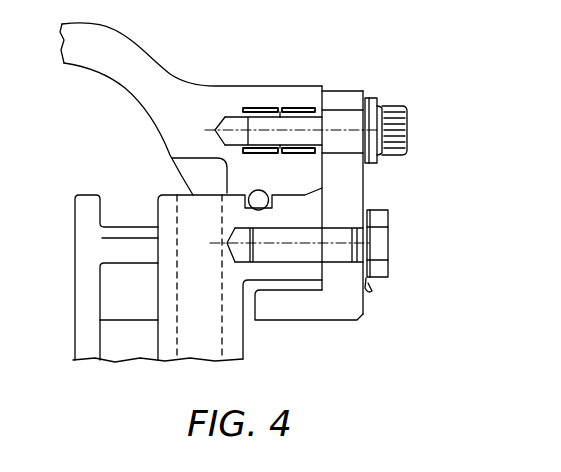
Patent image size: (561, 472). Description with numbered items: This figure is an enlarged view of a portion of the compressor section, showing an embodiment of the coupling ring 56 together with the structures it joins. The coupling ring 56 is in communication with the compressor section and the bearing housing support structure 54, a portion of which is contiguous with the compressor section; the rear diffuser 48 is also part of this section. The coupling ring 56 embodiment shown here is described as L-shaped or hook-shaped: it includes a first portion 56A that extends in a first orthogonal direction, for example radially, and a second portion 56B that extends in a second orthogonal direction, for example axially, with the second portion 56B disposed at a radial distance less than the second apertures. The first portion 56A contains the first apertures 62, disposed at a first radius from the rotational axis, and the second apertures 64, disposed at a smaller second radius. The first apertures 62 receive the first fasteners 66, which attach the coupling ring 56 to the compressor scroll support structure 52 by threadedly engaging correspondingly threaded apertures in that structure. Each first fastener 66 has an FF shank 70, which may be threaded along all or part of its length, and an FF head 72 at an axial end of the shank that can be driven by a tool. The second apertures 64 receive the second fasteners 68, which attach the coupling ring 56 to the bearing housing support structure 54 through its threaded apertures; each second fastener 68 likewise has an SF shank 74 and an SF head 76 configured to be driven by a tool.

The rear diffuser 48 is at (130, 340).
The compressor scroll support structure 52 is at (200, 110).
The bearing housing support structure 54 is at (232, 340).
The coupling ring 56 is at (392, 184).
The coupling ring first portion 56A is at (346, 98).
The coupling ring second portion 56B is at (345, 307).
The first apertures 62 is at (353, 115).
The second apertures 64 is at (340, 258).
The first fasteners 66 is at (410, 130).
The second fasteners 68 is at (390, 247).
The FF shank 70 is at (268, 110).
The FF head 72 is at (393, 103).
The SF shank 74 is at (270, 233).
The SF head 76 is at (390, 232).